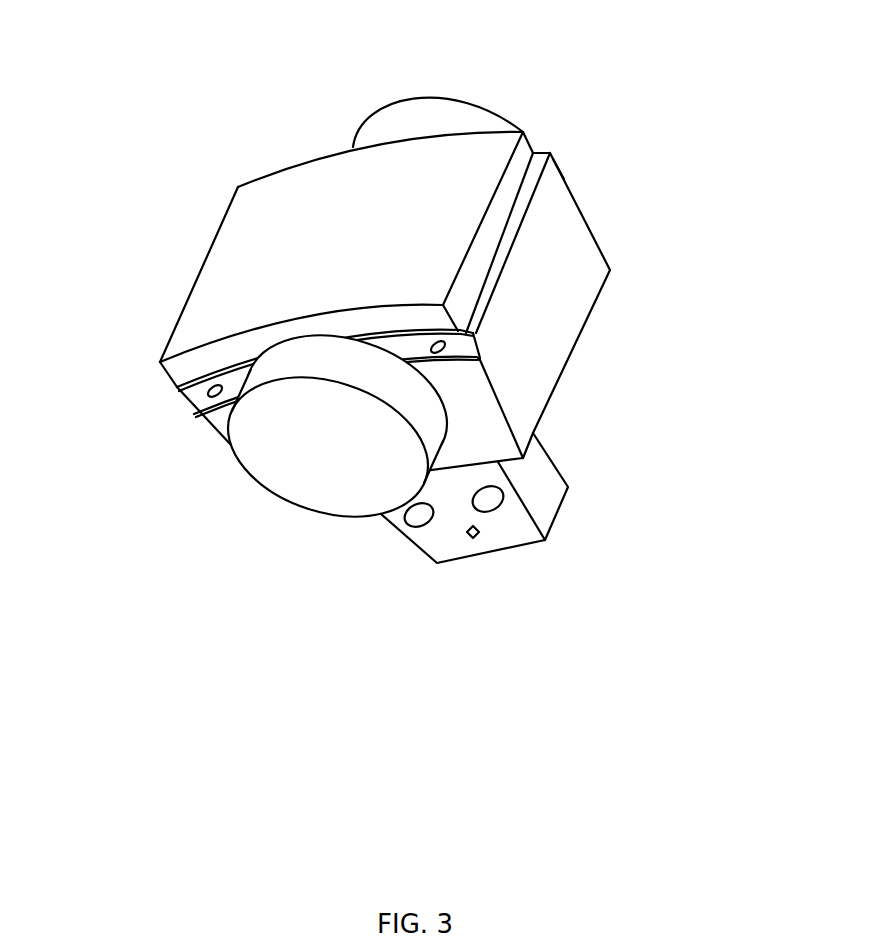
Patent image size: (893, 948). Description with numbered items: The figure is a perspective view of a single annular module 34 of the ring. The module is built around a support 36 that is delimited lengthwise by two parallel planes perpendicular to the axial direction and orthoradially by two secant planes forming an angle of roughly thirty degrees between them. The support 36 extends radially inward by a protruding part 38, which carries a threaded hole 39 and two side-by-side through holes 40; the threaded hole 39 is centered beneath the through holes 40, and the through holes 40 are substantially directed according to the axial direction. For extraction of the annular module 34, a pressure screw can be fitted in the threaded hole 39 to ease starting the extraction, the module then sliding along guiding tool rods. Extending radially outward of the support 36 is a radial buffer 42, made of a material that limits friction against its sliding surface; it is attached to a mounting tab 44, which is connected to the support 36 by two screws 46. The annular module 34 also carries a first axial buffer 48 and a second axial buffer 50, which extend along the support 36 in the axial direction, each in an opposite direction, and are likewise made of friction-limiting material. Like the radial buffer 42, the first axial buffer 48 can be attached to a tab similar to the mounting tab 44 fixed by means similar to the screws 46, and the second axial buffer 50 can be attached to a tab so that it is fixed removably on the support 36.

The annular module 34 is at (396, 377).
The support 36 is at (563, 283).
The protruding part 38 is at (528, 564).
The threaded hole 39 is at (470, 538).
The through holes 40 is at (417, 517).
The radial buffer 42 is at (290, 243).
The mounting tab 44 is at (197, 383).
The screws 46 is at (207, 388).
The first axial buffer 48 is at (310, 447).
The second axial buffer 50 is at (473, 105).